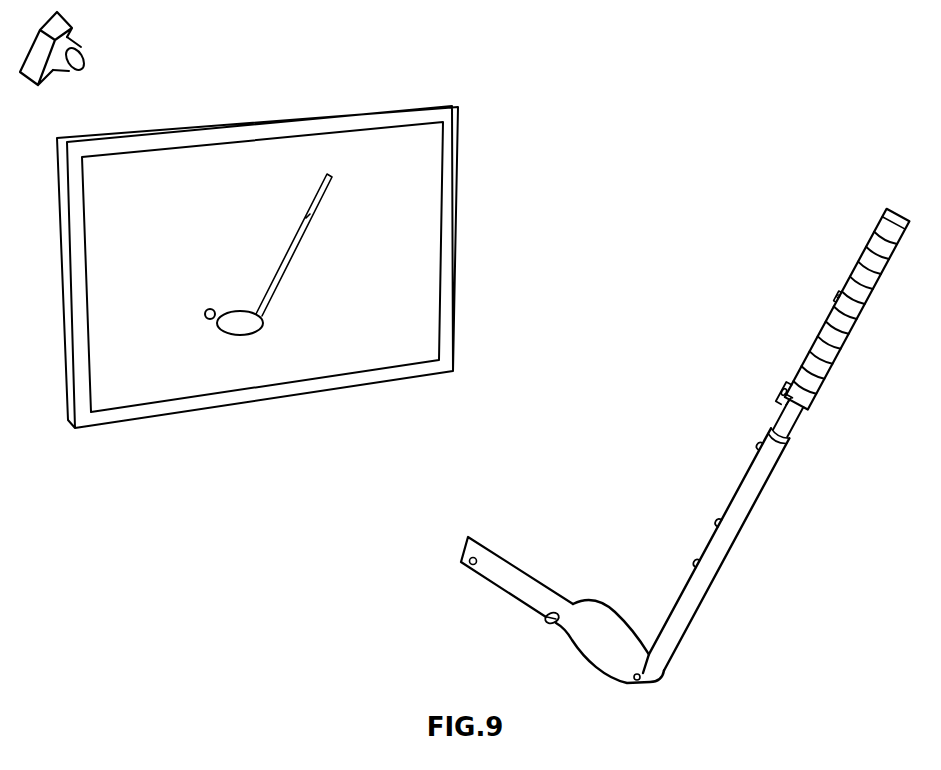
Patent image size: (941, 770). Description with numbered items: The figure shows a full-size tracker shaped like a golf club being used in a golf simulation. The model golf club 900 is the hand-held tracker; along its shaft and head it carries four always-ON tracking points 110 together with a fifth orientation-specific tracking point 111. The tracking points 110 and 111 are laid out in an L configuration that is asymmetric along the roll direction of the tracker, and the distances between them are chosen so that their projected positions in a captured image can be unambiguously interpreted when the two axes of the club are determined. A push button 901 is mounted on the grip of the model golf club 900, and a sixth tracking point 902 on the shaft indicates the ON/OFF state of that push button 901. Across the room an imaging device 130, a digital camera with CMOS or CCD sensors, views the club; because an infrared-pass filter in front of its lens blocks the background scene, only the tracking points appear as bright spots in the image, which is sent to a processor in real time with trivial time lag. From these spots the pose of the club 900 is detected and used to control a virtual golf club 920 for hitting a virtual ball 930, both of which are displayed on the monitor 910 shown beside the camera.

The imaging device 130 is at (78, 39).
The monitor 910 is at (458, 135).
The virtual golf club 920 is at (245, 330).
The virtual ball 930 is at (205, 322).
The model golf club 900 is at (720, 553).
The push button 901 is at (783, 395).
The sixth tracking point 902 is at (756, 444).
The tracking points 110 is at (637, 672).
The orientation-specific tracking point 111 is at (548, 622).